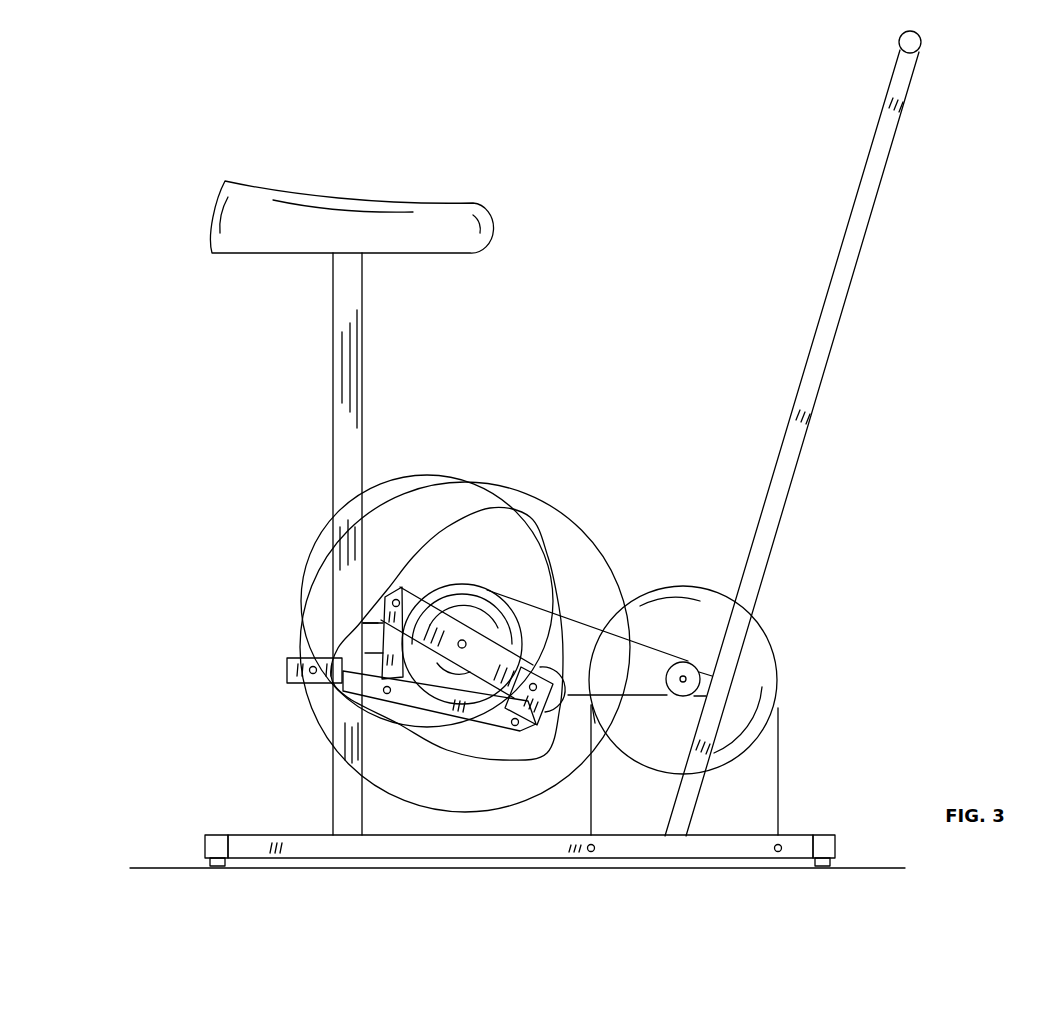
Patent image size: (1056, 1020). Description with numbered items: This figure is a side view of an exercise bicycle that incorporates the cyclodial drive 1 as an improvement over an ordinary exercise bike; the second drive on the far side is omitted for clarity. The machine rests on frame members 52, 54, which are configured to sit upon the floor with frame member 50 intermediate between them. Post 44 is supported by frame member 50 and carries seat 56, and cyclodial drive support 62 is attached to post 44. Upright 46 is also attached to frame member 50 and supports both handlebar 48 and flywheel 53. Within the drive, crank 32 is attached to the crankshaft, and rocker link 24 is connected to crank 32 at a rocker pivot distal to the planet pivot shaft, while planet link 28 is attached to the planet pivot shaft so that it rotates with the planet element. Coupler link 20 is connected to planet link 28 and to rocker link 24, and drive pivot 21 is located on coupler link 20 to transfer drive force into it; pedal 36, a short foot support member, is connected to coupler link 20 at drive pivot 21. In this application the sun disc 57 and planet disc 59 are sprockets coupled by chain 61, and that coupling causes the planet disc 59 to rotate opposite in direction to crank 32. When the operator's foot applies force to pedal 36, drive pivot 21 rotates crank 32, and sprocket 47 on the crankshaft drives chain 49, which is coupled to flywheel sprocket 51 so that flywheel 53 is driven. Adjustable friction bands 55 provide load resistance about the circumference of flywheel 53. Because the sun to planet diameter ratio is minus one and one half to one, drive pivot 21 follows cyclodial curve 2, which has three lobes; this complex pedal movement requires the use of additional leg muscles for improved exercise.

The cyclodial drive 1 is at (540, 480).
The cyclodial curve 2 is at (372, 480).
The coupler link 20 is at (483, 728).
The drive pivot 21 is at (306, 660).
The rocker link 24 is at (372, 628).
The planet link 28 is at (589, 762).
The crank 32 is at (415, 588).
The pedal 36 is at (297, 690).
The post 44 is at (333, 362).
The upright 46 is at (828, 283).
The sprocket 47 is at (455, 582).
The handlebar 48 is at (900, 42).
The chain 49 is at (605, 607).
The frame member 50 is at (498, 835).
The flywheel sprocket 51 is at (753, 610).
The frame member 52 is at (818, 835).
The flywheel 53 is at (778, 667).
The frame member 54 is at (220, 835).
The adjustable friction band 55 is at (778, 770).
The seat 56 is at (308, 200).
The sun disc 57 is at (478, 598).
The planet disc 59 is at (563, 617).
The chain 61 is at (527, 633).
The cyclodial drive support 62 is at (377, 620).